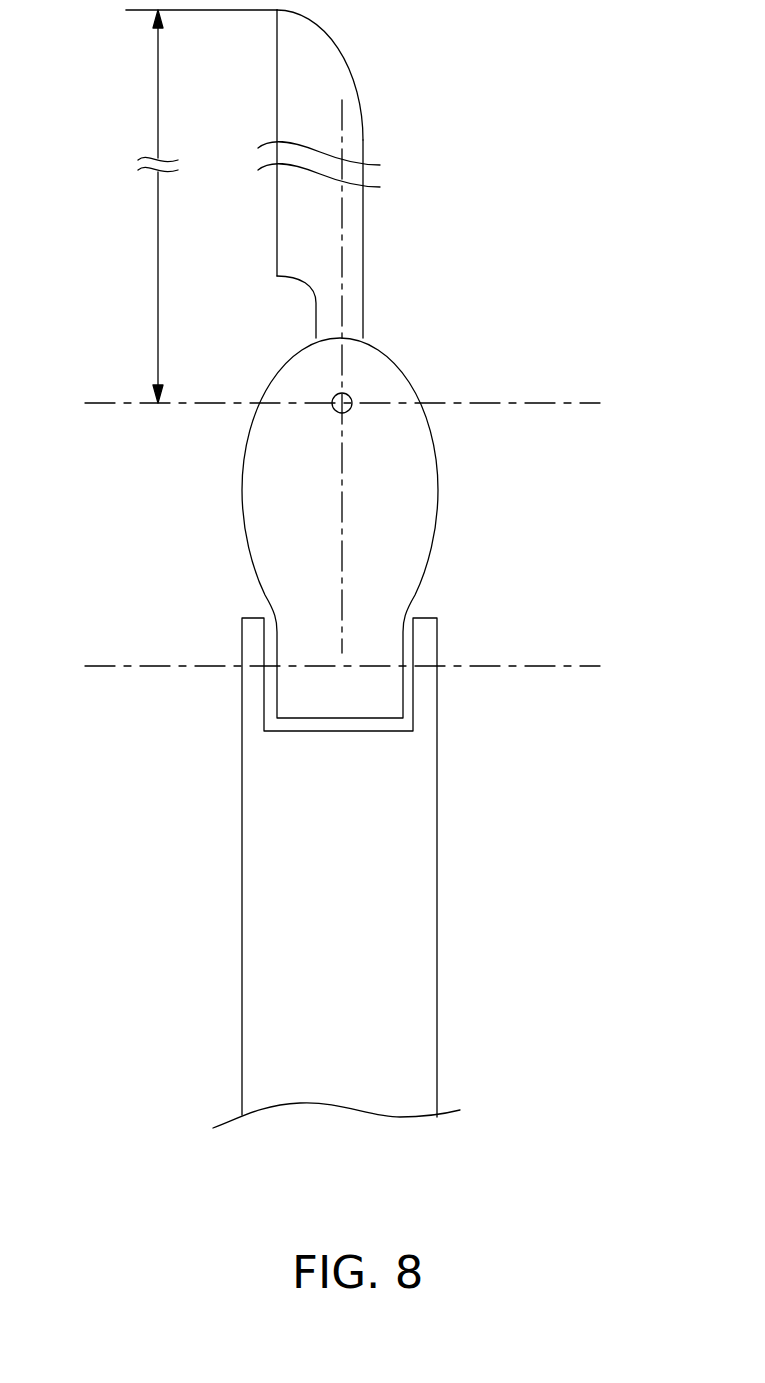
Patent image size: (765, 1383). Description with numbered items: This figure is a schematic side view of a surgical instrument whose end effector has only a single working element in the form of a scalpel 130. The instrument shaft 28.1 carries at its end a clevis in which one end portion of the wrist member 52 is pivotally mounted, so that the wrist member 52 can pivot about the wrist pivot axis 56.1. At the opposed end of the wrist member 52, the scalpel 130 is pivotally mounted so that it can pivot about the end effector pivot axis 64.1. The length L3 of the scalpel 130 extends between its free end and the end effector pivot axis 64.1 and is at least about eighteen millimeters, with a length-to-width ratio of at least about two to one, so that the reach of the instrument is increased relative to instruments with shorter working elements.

The scalpel 130 is at (346, 127).
The wrist member 52 is at (413, 494).
The end effector pivot axis 64.1 is at (347, 400).
The wrist pivot axis 56.1 is at (540, 667).
The shaft 28.1 is at (415, 908).
The length L3 is at (157, 240).